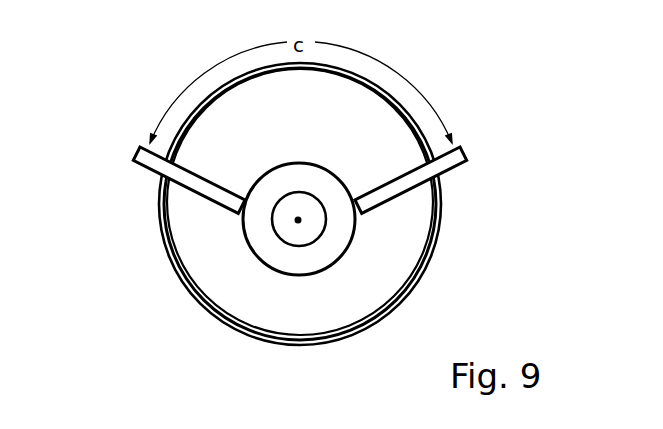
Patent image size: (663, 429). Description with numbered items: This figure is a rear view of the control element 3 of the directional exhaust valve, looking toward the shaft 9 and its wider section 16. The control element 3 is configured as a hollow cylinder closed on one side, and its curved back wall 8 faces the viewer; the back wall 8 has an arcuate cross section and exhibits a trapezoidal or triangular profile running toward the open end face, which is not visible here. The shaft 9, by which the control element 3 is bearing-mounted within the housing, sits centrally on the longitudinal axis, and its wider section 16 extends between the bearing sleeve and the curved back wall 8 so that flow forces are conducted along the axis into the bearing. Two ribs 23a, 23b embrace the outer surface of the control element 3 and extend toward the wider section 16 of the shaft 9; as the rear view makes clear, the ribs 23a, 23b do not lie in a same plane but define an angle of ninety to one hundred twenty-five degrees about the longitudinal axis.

The control element 3 is at (309, 203).
The back wall 8 is at (283, 303).
The shaft 9 is at (275, 233).
The wider section 16 is at (357, 235).
The rib 23a is at (406, 188).
The further rib 23b is at (197, 190).